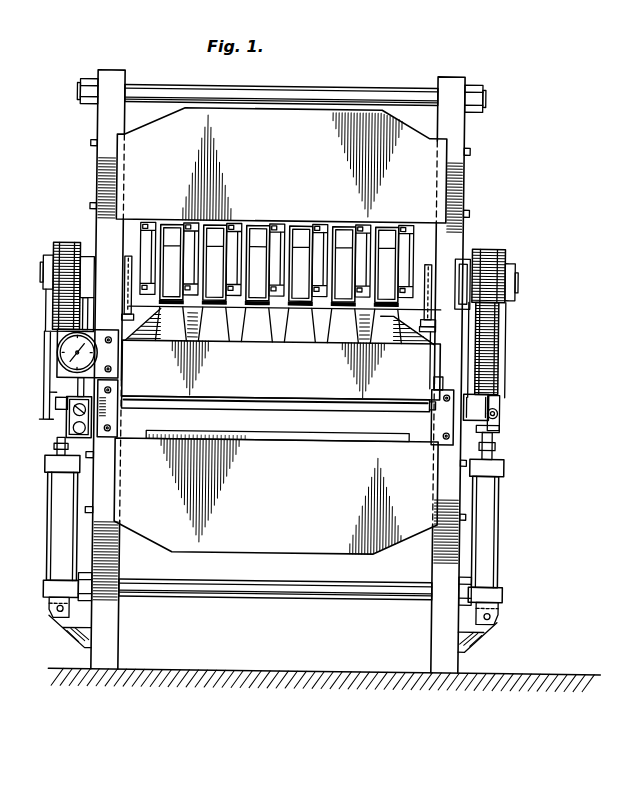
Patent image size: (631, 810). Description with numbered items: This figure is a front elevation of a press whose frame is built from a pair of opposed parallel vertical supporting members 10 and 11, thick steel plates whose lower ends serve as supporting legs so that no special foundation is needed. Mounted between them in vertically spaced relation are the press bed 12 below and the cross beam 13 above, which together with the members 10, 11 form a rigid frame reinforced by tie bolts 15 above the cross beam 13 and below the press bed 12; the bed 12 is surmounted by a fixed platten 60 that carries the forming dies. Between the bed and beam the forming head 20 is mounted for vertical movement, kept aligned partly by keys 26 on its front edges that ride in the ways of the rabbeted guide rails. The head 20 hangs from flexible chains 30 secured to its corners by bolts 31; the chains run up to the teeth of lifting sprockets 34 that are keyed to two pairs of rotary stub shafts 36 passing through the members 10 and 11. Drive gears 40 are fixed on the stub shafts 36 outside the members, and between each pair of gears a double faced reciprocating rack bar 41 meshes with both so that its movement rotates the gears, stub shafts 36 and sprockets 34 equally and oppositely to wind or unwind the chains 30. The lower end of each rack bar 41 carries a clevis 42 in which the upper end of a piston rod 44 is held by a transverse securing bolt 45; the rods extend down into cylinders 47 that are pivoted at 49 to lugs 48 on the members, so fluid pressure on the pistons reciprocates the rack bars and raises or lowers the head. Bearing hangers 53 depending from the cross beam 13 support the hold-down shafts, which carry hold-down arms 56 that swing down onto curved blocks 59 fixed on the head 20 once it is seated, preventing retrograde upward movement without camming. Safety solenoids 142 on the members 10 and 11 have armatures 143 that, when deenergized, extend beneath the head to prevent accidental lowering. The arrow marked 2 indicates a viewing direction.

The section line / viewing direction for FIG. 2 is at (523, 357).
The vertical supporting member 10 is at (95, 165).
The vertical supporting member 11 is at (462, 172).
The press bed 12 is at (276, 496).
The cross beam 13 is at (331, 117).
The tie bolts 15 is at (170, 87).
The forming head 20 is at (281, 370).
The keys 26 is at (120, 382).
The flexible chains 30 is at (435, 320).
The bolts 31 is at (436, 329).
The lifting sprockets 34 is at (128, 258).
The rotary stub shafts 36 is at (514, 283).
The drive gears 40 is at (68, 245).
The double faced reciprocating rack bar 41 is at (58, 331).
The clevis 42 is at (498, 427).
The piston rod 44 is at (57, 441).
The transverse securing bolt 45 is at (500, 412).
The cylinders 47 is at (52, 503).
The lugs 48 is at (75, 632).
The pivot 49 is at (58, 609).
The bearing hangers 53 is at (239, 232).
The hold-down arms 56 is at (301, 233).
The blocks 59 is at (300, 309).
The fixed platten 60 is at (328, 440).
The safety solenoids 142 is at (66, 392).
The armatures 143 is at (128, 404).